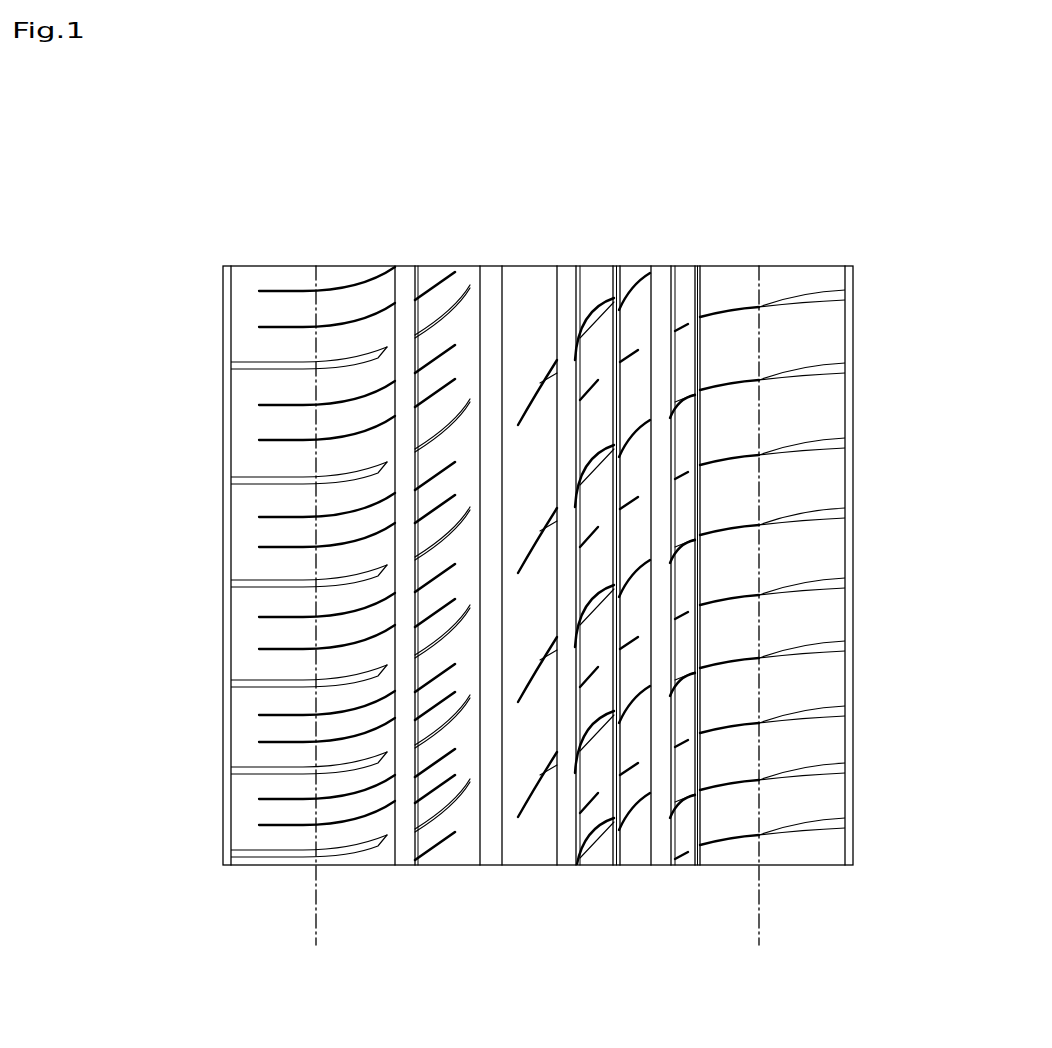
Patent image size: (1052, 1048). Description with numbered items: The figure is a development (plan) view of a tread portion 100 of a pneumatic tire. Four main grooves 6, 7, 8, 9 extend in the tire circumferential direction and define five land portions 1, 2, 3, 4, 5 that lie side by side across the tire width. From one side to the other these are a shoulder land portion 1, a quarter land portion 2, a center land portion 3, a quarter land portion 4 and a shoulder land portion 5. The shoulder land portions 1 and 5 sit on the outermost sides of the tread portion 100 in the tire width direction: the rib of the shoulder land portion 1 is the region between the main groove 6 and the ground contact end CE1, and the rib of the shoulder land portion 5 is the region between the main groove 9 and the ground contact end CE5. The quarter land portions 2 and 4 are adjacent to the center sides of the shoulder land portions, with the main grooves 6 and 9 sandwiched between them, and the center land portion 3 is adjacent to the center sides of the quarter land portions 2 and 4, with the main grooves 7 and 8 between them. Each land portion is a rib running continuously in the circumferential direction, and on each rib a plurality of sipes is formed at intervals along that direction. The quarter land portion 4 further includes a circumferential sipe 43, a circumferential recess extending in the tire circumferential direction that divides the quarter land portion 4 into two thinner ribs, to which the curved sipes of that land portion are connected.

The tread portion 100 is at (831, 210).
The shoulder land portion 1 is at (396, 266).
The quarter land portion 2 is at (481, 266).
The center land portion 3 is at (557, 266).
The quarter land portion 4 is at (651, 266).
The shoulder land portion 5 is at (759, 266).
The main groove 6 is at (405, 836).
The main groove 7 is at (491, 836).
The main groove 8 is at (567, 836).
The main groove 9 is at (662, 836).
The circumferential sipe 43 is at (615, 864).
The ground contact end CE1 is at (315, 936).
The ground contact end CE5 is at (760, 936).